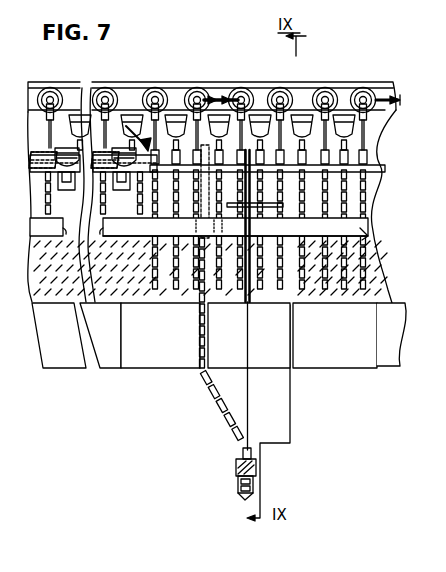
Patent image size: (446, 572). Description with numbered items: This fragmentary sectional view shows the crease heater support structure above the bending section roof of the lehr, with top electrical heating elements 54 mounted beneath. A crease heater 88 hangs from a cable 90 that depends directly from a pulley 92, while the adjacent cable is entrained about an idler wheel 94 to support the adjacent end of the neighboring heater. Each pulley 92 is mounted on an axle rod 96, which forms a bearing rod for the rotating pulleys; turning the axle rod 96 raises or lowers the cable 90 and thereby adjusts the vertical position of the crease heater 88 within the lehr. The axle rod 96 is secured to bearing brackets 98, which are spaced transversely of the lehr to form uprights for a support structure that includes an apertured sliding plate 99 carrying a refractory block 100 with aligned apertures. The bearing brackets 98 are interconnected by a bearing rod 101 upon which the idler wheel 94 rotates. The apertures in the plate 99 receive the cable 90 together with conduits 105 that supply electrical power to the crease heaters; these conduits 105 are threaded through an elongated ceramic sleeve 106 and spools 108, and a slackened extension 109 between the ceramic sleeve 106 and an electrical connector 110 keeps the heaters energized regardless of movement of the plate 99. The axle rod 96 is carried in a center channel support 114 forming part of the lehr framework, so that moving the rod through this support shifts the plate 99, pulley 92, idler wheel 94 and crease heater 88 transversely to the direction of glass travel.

The top electrical heating elements 54 is at (280, 362).
The crease heaters 88 is at (243, 497).
The cable 90 is at (248, 420).
The pulley 92 is at (261, 148).
The idler wheel 94 is at (252, 218).
The axle rod 96 is at (378, 168).
The bearing brackets 98 is at (222, 90).
The apertured sliding plate 99 is at (370, 240).
The refractory block 100 is at (366, 224).
The bearing rod 101 is at (229, 191).
The conduits 105 is at (203, 372).
The ceramic sleeve 106 is at (217, 97).
The spools 108 is at (236, 438).
The slackened extension 109 is at (163, 150).
The electrical connector 110 is at (120, 142).
The center channel support 114 is at (90, 190).